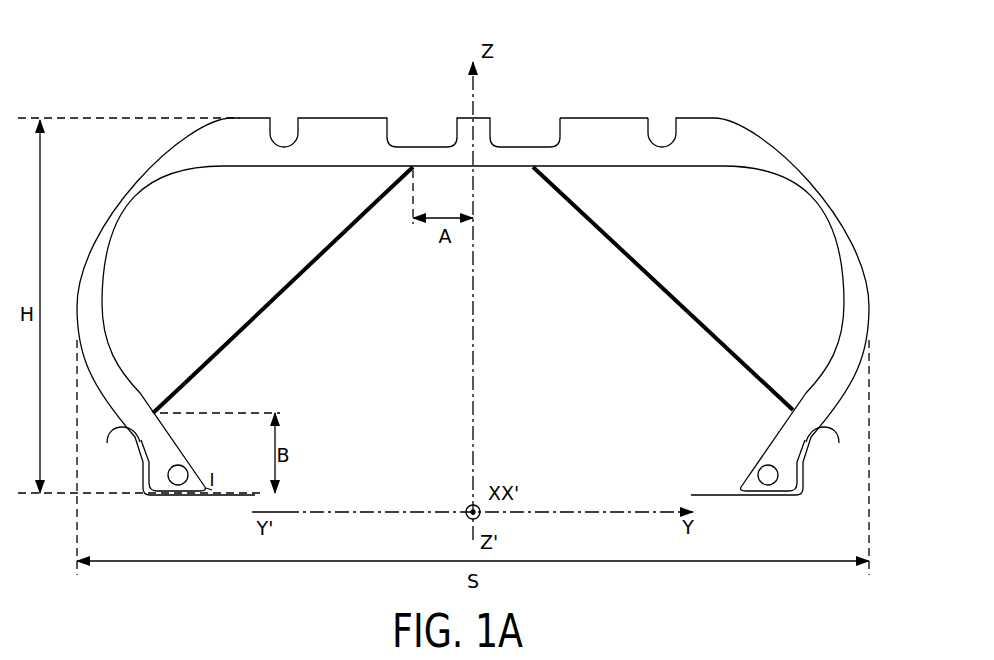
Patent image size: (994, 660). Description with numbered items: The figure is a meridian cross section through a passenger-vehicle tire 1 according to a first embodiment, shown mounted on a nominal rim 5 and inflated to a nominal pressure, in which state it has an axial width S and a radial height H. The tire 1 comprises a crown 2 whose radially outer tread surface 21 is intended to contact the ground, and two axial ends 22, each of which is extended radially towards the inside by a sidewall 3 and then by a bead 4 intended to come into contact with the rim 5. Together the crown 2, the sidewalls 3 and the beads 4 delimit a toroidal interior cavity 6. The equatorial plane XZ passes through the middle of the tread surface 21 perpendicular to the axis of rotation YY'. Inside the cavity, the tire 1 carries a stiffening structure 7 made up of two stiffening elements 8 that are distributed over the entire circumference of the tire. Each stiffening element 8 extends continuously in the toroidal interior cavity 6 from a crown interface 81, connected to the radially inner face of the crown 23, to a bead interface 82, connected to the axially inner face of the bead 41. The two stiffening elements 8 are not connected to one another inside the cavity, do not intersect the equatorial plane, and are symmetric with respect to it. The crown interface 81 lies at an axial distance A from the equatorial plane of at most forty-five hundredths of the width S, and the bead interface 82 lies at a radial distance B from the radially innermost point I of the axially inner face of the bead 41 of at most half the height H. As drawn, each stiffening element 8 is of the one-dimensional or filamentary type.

The tire 1 is at (191, 106).
The crown 2 is at (707, 136).
The tread surface 21 is at (607, 114).
The axial end of the crown 22 is at (812, 179).
The radially inner face of the crown 23 is at (623, 170).
The sidewall 3 is at (852, 285).
The bead 4 is at (788, 459).
The axially inner face of the bead 41 is at (759, 444).
The nominal rim 5 is at (140, 481).
The toroidal interior cavity 6 is at (767, 309).
The stiffening structure 7 is at (608, 247).
The stiffening element 8 is at (264, 320).
The crown interface 81 is at (410, 169).
The bead interface 82 is at (151, 406).